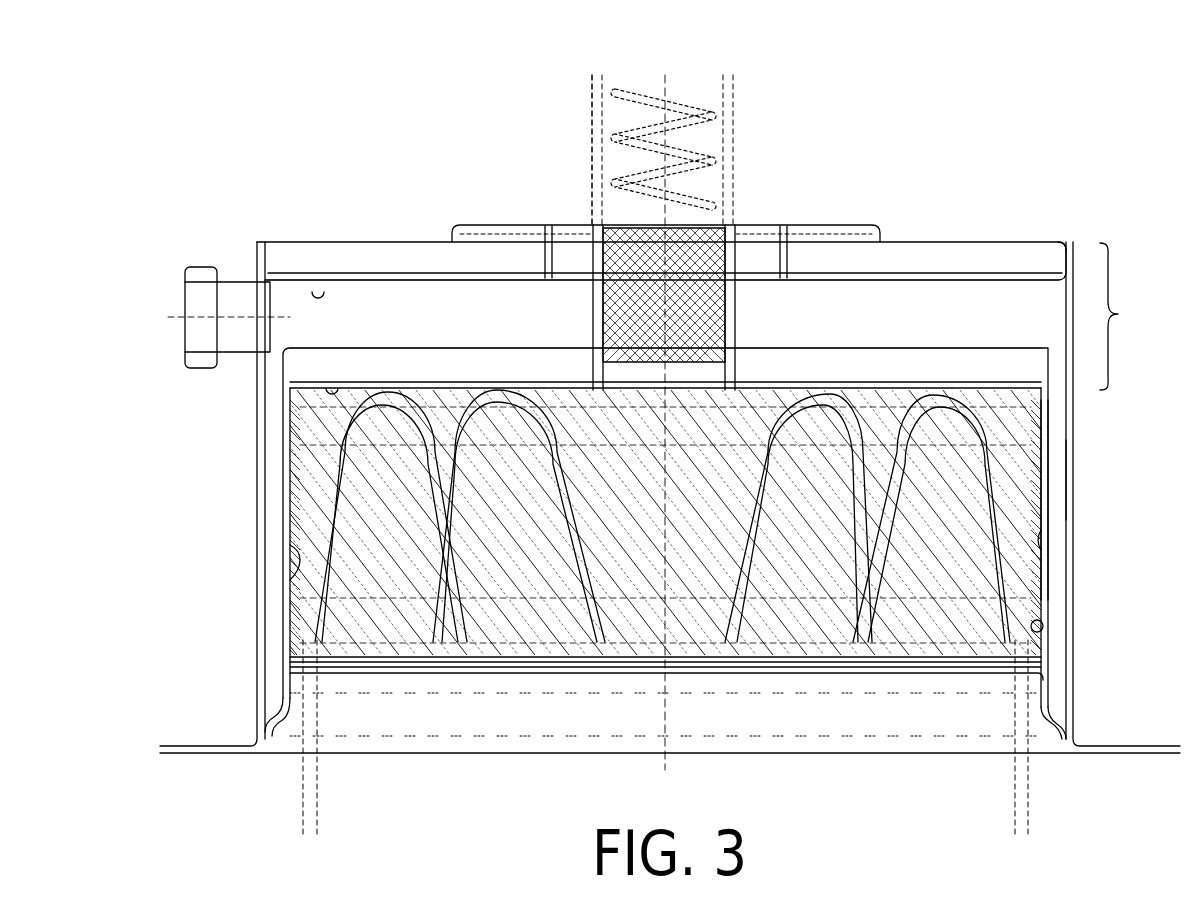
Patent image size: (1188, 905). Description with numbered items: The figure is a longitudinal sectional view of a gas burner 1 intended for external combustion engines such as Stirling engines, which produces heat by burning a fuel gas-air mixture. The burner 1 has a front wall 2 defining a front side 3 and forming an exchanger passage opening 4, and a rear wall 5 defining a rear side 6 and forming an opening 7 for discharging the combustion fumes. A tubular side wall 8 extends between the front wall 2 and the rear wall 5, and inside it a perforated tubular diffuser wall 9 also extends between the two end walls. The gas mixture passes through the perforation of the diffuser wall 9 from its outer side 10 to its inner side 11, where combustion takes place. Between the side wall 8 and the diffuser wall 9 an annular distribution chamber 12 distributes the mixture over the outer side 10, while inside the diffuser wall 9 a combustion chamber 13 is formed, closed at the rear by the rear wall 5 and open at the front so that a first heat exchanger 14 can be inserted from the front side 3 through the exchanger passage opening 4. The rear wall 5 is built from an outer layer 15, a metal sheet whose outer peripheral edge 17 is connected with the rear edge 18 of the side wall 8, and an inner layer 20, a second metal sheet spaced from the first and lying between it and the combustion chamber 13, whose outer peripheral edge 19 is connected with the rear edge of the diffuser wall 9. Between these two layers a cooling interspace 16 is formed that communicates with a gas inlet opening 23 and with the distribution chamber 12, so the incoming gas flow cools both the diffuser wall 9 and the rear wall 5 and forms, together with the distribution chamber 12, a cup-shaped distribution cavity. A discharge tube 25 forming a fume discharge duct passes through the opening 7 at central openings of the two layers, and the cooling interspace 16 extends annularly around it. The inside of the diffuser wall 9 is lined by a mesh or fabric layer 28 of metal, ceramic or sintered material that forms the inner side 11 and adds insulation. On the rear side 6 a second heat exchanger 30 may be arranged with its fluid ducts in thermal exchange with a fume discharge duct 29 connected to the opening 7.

The burner 1 is at (208, 545).
The front wall 2 is at (1052, 690).
The front side 3 is at (799, 803).
The exchanger passage opening 4 is at (530, 663).
The rear wall 5 is at (1121, 316).
The rear side 6 is at (792, 166).
The opening for discharging the combustion fumes 7 is at (640, 290).
The tubular side wall 8 is at (1077, 477).
The tubular diffuser wall 9 is at (1052, 540).
The outer side of the diffuser wall 10 is at (1055, 583).
The inner side of the diffuser wall 11 is at (1048, 632).
The annular distribution chamber 12 is at (1074, 437).
The combustion chamber 13 is at (645, 535).
The first heat exchanger 14 is at (300, 500).
The outer layer 15 is at (952, 275).
The cooling interspace 16 is at (418, 326).
The outer peripheral edge 17 is at (1050, 260).
The rear edge of the side wall 18 is at (262, 255).
The outer peripheral edge 19 is at (1040, 362).
The inner layer 20 is at (890, 380).
The gas inlet opening 23 is at (262, 300).
The discharge tube 25 is at (737, 325).
The mesh or fabric layer 28 is at (318, 292).
The fume discharge duct 29 is at (733, 128).
The second heat exchanger 30 is at (593, 148).